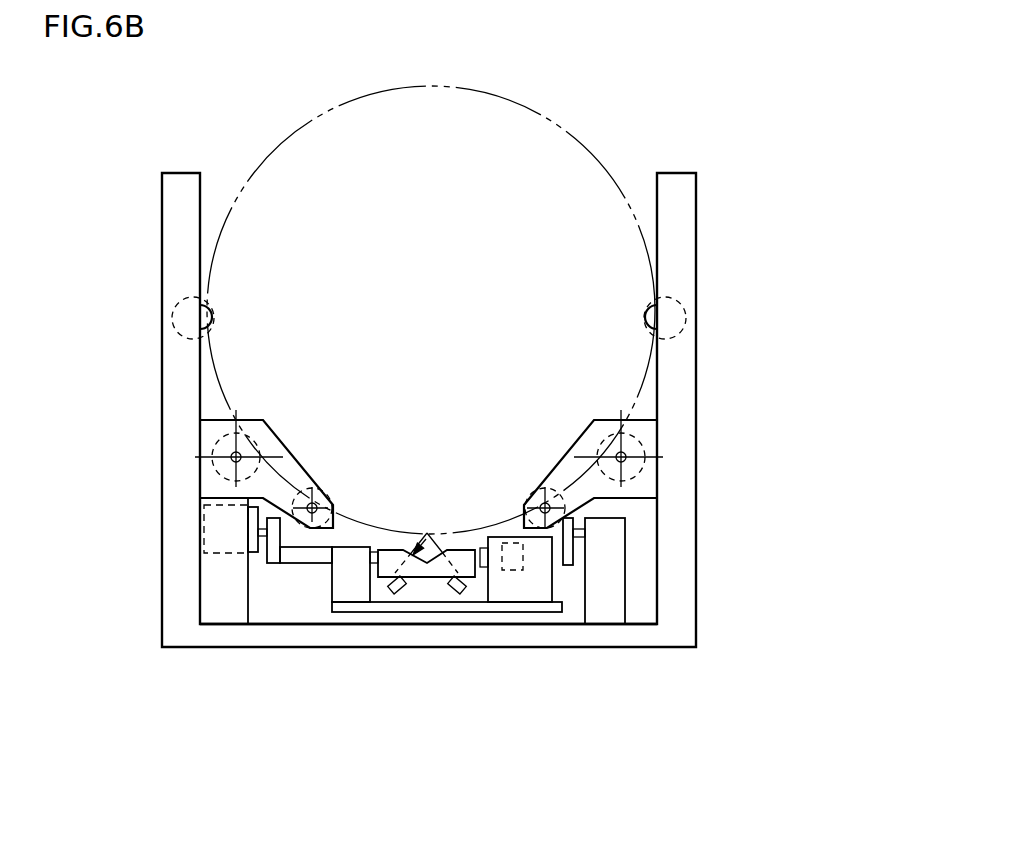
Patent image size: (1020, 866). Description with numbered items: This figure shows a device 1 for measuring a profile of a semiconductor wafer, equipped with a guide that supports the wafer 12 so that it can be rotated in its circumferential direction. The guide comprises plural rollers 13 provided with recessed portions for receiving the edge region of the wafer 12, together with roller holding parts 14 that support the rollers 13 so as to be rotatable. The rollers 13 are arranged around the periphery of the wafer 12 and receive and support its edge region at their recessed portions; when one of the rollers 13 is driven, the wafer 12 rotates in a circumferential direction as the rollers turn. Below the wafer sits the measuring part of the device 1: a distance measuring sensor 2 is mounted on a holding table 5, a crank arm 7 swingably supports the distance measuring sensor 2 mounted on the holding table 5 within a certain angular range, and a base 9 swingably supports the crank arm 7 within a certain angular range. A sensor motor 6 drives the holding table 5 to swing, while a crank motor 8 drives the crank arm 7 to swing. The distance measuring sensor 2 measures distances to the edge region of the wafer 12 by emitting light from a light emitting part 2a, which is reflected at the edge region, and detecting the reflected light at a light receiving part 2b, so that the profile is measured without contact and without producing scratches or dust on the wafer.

The device for measuring a profile 1 is at (670, 156).
The distance measuring sensor 2 is at (363, 743).
The light emitting part 2a is at (458, 592).
The light receiving part 2b is at (395, 592).
The holding table 5 is at (468, 577).
The sensor motor 6 is at (502, 572).
The crank arm 7 is at (508, 612).
The crank motor 8 is at (253, 553).
The base 9 is at (200, 648).
The wafer 12 is at (585, 147).
The rollers 13 is at (213, 445).
The roller holding parts 14 is at (283, 563).